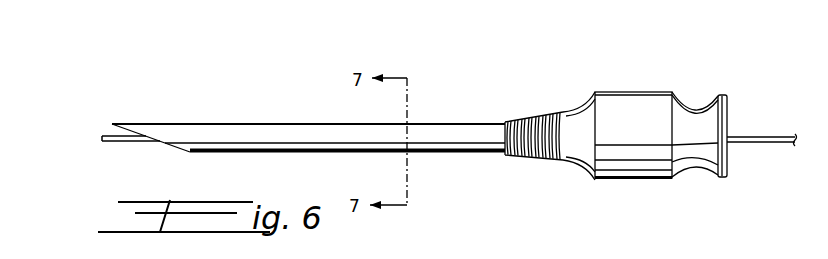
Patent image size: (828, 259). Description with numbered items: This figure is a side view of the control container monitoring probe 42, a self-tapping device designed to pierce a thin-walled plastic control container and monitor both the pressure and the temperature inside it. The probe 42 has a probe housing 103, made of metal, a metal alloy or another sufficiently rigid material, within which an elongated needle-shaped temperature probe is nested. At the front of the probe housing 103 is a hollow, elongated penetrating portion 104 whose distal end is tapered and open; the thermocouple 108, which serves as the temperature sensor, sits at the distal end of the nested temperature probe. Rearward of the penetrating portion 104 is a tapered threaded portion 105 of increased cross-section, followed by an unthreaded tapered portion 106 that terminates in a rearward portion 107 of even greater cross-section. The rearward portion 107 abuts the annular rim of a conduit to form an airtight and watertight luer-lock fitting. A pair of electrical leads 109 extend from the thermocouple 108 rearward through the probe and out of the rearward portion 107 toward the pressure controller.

The probe housing 103 is at (470, 93).
The penetrating portion 104 is at (248, 153).
The threaded portion 105 is at (518, 160).
The unthreaded tapered portion 106 is at (590, 92).
The rearward portion 107 is at (627, 178).
The thermocouple 108 is at (108, 142).
The electrical leads 109 is at (753, 133).
The control container monitoring probe 42 is at (672, 193).